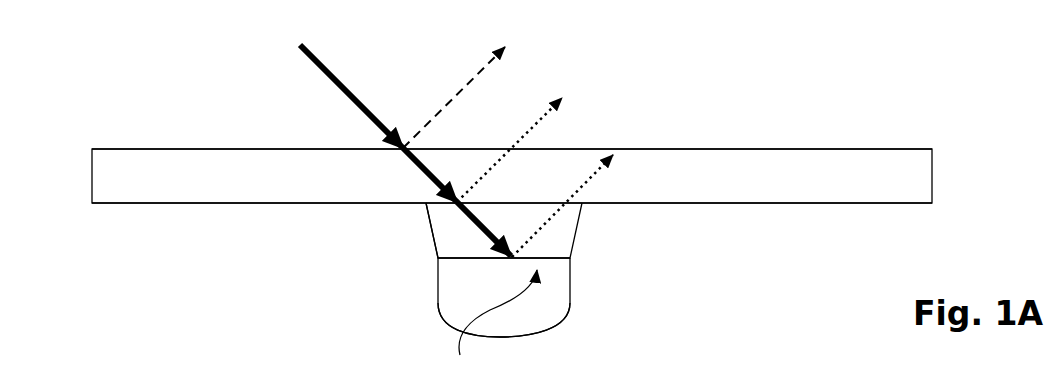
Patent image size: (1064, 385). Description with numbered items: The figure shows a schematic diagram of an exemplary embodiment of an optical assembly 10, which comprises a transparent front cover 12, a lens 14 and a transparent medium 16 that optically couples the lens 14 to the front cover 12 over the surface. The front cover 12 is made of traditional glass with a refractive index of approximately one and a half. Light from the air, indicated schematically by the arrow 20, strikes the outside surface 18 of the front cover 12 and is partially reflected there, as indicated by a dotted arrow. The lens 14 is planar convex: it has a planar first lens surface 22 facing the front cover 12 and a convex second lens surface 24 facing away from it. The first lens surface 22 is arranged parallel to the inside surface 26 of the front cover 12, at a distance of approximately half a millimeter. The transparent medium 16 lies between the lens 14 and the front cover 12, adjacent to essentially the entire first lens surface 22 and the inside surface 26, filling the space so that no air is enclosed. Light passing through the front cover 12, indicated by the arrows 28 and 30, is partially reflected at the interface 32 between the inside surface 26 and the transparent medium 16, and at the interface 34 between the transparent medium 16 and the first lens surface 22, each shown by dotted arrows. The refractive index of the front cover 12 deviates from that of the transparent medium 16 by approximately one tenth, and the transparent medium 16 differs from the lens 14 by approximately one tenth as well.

The optical assembly 10 is at (868, 125).
The transparent front cover 12 is at (893, 179).
The lens 14 is at (537, 303).
The transparent medium 16 is at (540, 243).
The outside surface 18 is at (723, 148).
The arrow 20 is at (347, 100).
The first lens surface 22 is at (493, 258).
The second lens surface 24 is at (503, 338).
The inside surface 26 is at (747, 203).
The arrow 28 is at (425, 185).
The arrow 30 is at (487, 238).
The interface 32 is at (539, 192).
The interface 34 is at (491, 327).